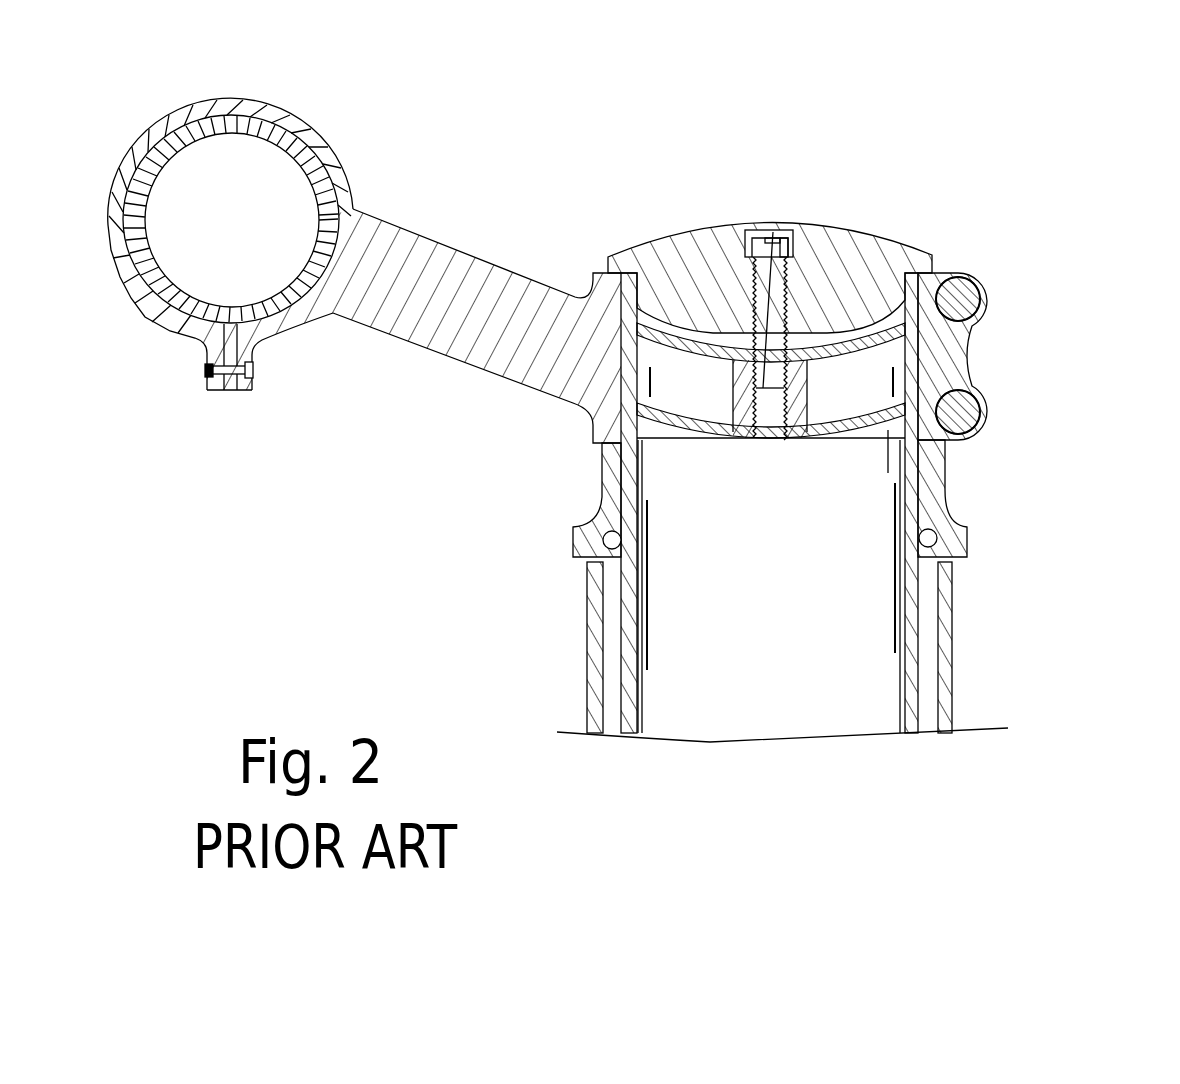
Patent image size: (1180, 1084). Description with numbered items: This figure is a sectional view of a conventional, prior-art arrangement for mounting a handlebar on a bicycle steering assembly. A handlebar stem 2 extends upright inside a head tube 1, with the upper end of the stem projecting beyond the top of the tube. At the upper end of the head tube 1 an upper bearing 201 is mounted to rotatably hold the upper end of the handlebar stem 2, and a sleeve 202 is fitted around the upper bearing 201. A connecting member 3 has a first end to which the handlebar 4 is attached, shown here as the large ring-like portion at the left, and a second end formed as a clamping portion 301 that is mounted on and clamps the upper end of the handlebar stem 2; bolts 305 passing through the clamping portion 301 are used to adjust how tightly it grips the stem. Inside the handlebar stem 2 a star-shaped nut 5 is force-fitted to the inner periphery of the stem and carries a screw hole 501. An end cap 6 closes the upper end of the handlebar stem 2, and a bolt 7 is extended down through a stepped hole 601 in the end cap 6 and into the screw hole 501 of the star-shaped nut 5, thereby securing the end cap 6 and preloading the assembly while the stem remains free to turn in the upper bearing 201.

The head tube 1 is at (960, 662).
The handlebar stem 2 is at (900, 673).
The connecting member 3 is at (444, 292).
The handlebar 4 is at (302, 148).
The star-shaped nut 5 is at (688, 353).
The end cap 6 is at (727, 250).
The bolt 7 is at (780, 240).
The upper bearing 201 is at (1017, 538).
The sleeve 202 is at (960, 463).
The clamping portion 301 is at (943, 353).
The bolts 305 is at (960, 278).
The screw hole 501 is at (758, 390).
The stepped hole 601 is at (773, 230).